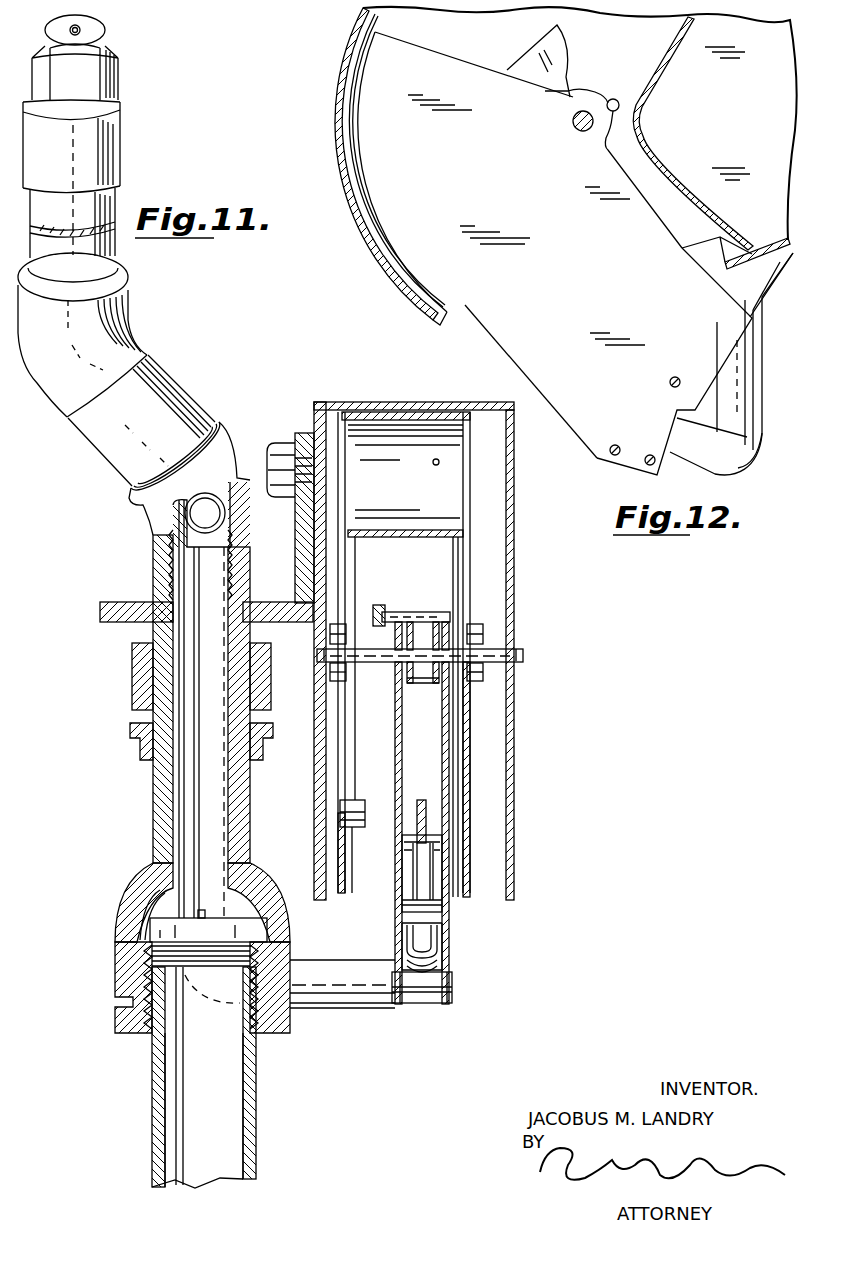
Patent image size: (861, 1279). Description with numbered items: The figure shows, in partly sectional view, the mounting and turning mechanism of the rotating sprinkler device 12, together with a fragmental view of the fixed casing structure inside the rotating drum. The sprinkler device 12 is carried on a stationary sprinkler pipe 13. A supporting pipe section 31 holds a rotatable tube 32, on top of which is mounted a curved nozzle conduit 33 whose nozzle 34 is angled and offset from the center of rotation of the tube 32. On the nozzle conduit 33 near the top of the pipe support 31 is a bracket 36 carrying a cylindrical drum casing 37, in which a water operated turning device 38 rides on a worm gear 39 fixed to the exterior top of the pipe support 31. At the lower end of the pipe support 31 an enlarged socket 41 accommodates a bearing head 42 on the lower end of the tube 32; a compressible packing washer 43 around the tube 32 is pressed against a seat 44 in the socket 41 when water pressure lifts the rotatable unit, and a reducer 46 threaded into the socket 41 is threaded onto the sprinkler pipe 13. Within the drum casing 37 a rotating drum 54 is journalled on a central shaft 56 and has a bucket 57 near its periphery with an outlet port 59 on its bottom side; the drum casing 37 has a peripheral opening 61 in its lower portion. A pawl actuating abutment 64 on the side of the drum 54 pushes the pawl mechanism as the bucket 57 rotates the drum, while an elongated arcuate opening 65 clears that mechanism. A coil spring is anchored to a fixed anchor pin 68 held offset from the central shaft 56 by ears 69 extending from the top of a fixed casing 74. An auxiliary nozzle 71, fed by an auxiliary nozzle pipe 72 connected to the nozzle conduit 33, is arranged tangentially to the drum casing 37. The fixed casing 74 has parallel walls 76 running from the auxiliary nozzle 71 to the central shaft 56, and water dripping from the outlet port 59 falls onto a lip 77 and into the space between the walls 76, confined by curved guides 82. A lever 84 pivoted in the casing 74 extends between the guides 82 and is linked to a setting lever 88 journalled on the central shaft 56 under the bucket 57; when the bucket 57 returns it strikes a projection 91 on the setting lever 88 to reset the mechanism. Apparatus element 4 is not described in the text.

In FIG. 11, the clamp nut 4 is at (130, 733).
In FIG. 11, the sprinkler device 12 is at (362, 402).
In FIG. 12, the sprinkler device 12 is at (396, 288).
In FIG. 11, the sprinkler pipe 13 is at (256, 1100).
In FIG. 11, the supporting pipe section 31 is at (252, 832).
In FIG. 11, the rotatable tube 32 is at (153, 790).
In FIG. 11, the nozzle conduit 33 is at (216, 426).
In FIG. 11, the nozzle 34 is at (120, 75).
In FIG. 11, the bracket 36 is at (112, 602).
In FIG. 11, the drum casing 37 is at (305, 432).
In FIG. 11, the water operated turning device 38 is at (480, 514).
In FIG. 11, the worm gear 39 is at (132, 674).
In FIG. 11, the socket 41 is at (115, 946).
In FIG. 11, the bearing head 42 is at (267, 920).
In FIG. 11, the packing washer 43 is at (140, 895).
In FIG. 11, the seat 44 is at (155, 878).
In FIG. 11, the reducer 46 is at (140, 975).
In FIG. 11, the rotating drum 54 is at (342, 893).
In FIG. 12, the rotating drum 54 is at (337, 95).
In FIG. 11, the central shaft 56 is at (515, 662).
In FIG. 12, the central shaft 56 is at (576, 124).
In FIG. 11, the bucket 57 is at (418, 490).
In FIG. 12, the bucket 57 is at (760, 120).
In FIG. 11, the outlet port 59 is at (436, 466).
In FIG. 12, the outlet port 59 is at (748, 248).
In FIG. 12, the peripheral opening 61 is at (442, 323).
In FIG. 11, the pawl actuating abutment 64 is at (362, 804).
In FIG. 11, the elongated arcuate opening 65 is at (344, 692).
In FIG. 11, the anchor pin 68 is at (436, 612).
In FIG. 12, the anchor pin 68 is at (618, 100).
In FIG. 12, the ears 69 is at (607, 127).
In FIG. 11, the auxiliary nozzle 71 is at (408, 943).
In FIG. 11, the auxiliary nozzle pipe 72 is at (338, 1008).
In FIG. 12, the auxiliary nozzle pipe 72 is at (748, 395).
In FIG. 11, the fixed casing 74 is at (455, 938).
In FIG. 12, the fixed casing 74 is at (604, 398).
In FIG. 11, the casing walls 76 is at (395, 729).
In FIG. 12, the casing walls 76 is at (545, 337).
In FIG. 12, the lip 77 is at (735, 268).
In FIG. 11, the curved guides 82 is at (436, 870).
In FIG. 11, the lever 84 is at (426, 804).
In FIG. 11, the setting lever 88 is at (422, 686).
In FIG. 12, the setting lever 88 is at (563, 88).
In FIG. 12, the projection 91 is at (510, 68).